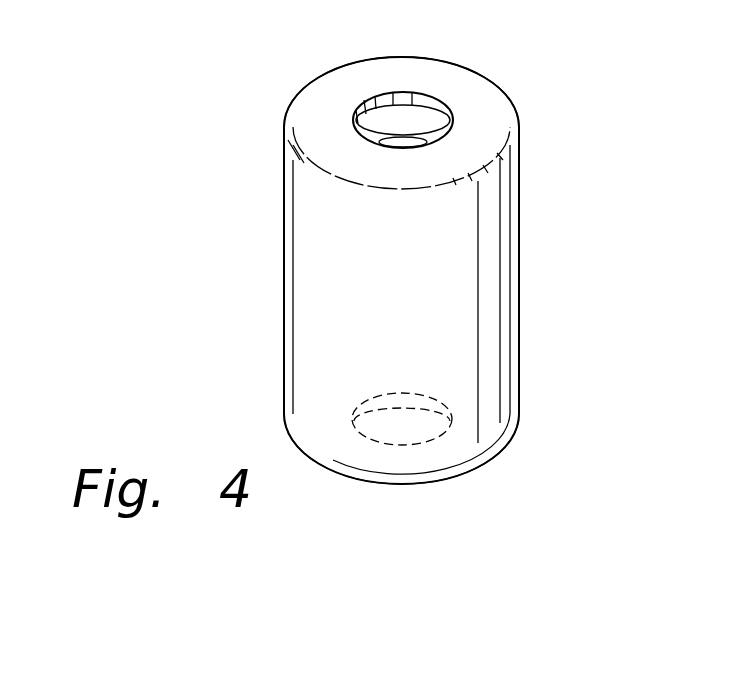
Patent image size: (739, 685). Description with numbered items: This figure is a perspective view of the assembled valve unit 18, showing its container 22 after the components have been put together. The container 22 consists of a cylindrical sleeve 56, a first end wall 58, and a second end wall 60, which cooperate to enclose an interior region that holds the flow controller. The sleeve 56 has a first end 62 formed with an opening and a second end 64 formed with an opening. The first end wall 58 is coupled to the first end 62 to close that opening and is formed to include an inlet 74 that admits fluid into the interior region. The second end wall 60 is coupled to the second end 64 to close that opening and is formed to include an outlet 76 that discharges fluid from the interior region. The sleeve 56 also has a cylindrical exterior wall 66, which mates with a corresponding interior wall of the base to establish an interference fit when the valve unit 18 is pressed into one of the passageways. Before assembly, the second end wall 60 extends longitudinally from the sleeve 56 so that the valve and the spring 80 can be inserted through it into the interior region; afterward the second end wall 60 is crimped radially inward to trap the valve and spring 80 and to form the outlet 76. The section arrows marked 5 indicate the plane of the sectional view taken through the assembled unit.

The valve unit 18 is at (258, 199).
The container 22 is at (530, 254).
The cylindrical sleeve 56 is at (507, 320).
The first end wall 58 is at (385, 463).
The second end wall 60 is at (488, 103).
The first end 62 is at (505, 450).
The second end 64 is at (519, 132).
The cylindrical exterior wall 66 is at (359, 294).
The inlet 74 is at (403, 393).
The outlet 76 is at (372, 95).
The spring 80 is at (418, 110).
The section line 5- 5 is at (240, 258).